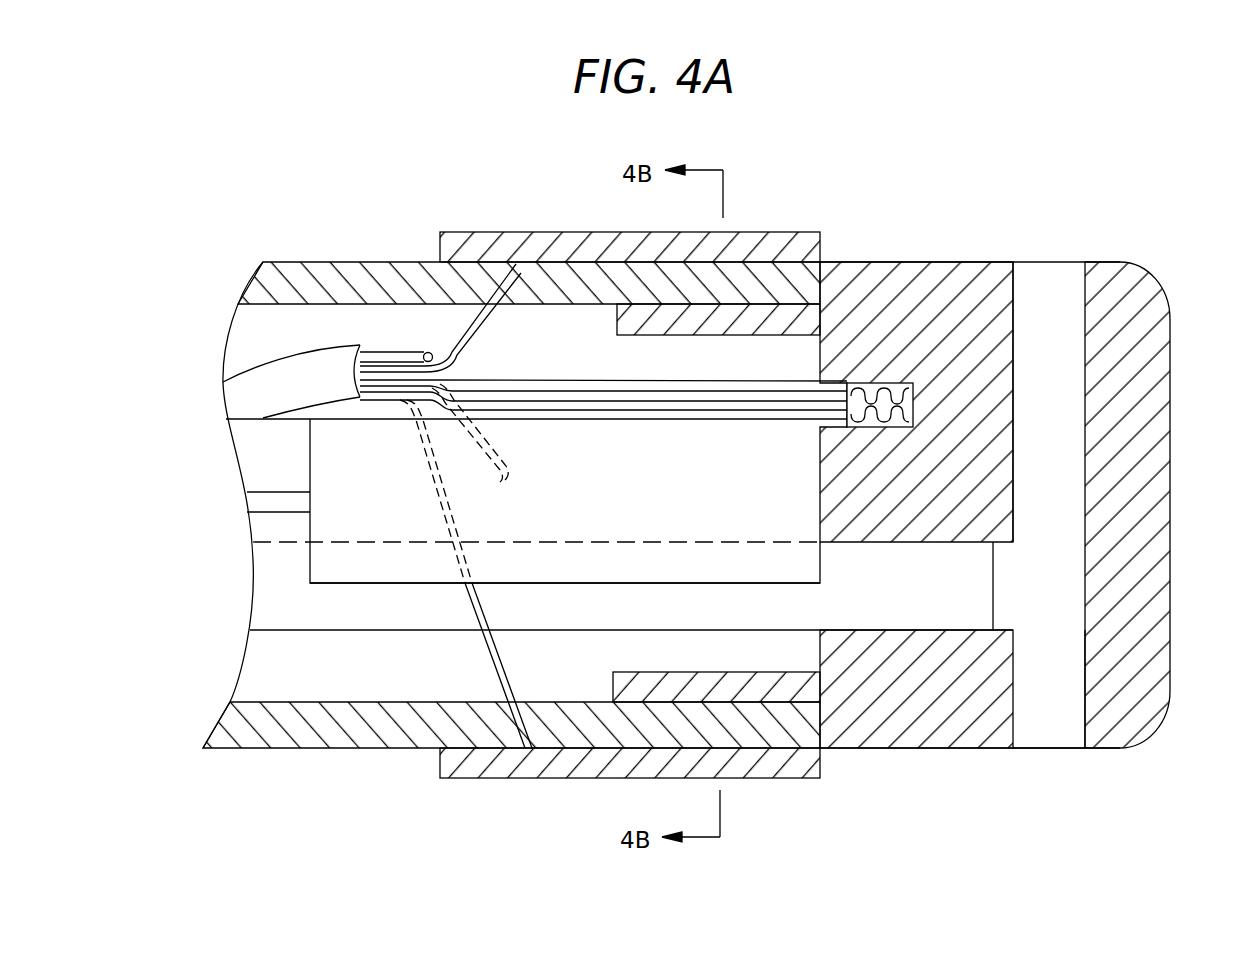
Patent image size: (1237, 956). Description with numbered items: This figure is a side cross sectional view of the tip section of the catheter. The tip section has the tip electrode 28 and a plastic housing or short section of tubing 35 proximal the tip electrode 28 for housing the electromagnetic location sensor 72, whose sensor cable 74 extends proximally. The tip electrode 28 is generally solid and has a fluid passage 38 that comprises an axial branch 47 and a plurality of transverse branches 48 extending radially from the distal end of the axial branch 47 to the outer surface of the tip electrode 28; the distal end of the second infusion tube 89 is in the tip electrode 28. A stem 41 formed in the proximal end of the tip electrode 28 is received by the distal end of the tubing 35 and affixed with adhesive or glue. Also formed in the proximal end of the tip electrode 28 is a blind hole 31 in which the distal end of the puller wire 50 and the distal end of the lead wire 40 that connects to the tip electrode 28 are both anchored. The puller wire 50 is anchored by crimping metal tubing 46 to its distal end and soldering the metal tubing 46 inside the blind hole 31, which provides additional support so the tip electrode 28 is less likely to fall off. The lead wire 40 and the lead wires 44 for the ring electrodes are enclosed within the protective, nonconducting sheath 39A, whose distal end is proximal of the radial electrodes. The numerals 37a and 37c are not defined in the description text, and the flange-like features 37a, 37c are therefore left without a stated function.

The sheath 39A is at (295, 352).
The lead wires 44 is at (403, 350).
The lead wire 40 is at (573, 380).
The upper flange 37a is at (797, 232).
The puller wire 50 is at (777, 400).
The blind hole 31 is at (883, 383).
The metal tubing 46 is at (913, 390).
The fluid passage 38 is at (1030, 587).
The sensor cable 74 is at (253, 503).
The tip electrode 28 is at (1150, 727).
The transverse branches 48 is at (1040, 717).
The second infusion tube 89 is at (935, 597).
The axial branch 47 is at (890, 633).
The lower flange 37c is at (790, 778).
The stem 41 is at (757, 703).
The electromagnetic location sensor 72 is at (633, 583).
The plastic housing 35 is at (240, 750).